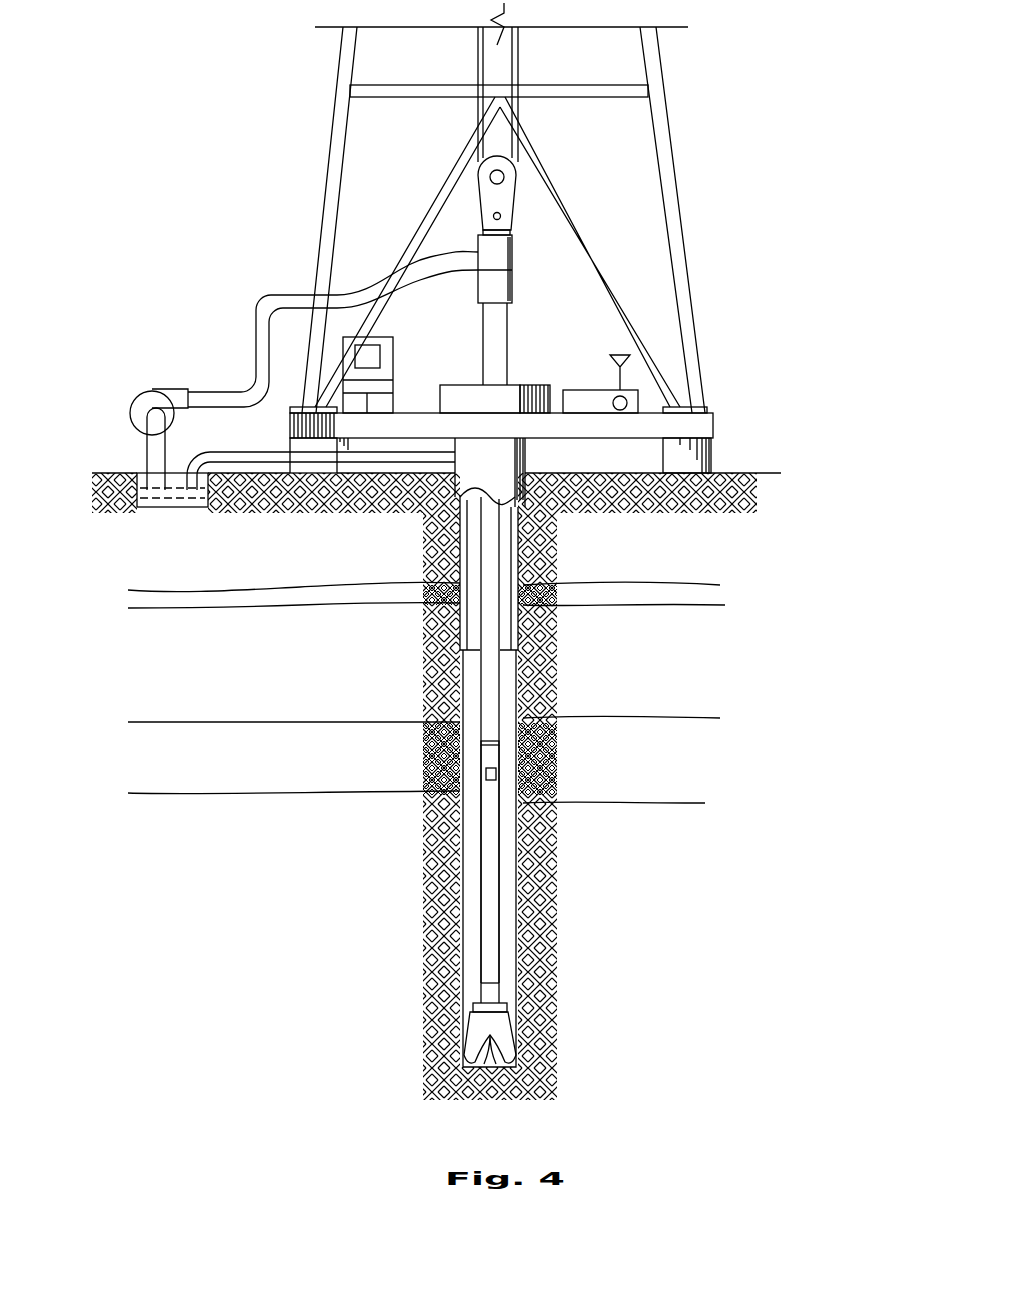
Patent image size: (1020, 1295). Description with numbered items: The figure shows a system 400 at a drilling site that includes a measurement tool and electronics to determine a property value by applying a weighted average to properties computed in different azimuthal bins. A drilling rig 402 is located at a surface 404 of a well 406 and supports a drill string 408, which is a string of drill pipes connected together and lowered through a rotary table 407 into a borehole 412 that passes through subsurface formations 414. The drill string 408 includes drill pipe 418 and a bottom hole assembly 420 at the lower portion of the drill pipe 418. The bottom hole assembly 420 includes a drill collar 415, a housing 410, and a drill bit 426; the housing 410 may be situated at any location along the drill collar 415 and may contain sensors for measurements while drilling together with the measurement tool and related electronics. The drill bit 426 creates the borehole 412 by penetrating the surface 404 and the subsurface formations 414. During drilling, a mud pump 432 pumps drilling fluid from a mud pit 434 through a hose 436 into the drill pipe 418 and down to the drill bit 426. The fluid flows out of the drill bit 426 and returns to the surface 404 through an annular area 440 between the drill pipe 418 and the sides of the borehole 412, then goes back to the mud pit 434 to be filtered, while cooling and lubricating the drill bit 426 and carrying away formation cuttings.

The system 400 is at (238, 140).
The drilling rig 402 is at (672, 168).
The surface 404 is at (766, 473).
The well 406 is at (534, 467).
The rotary table 407 is at (458, 385).
The drill string 408 is at (503, 583).
The housing 410 is at (497, 773).
The borehole 412 is at (519, 548).
The subsurface formations 414 is at (133, 555).
The drill collar 415 is at (495, 762).
The drill pipe 418 is at (485, 675).
The bottom hole assembly 420 is at (418, 645).
The drill bit 426 is at (498, 1022).
The mud pump 432 is at (162, 390).
The mud pit 434 is at (156, 508).
The hose 436 is at (267, 293).
The annular area 440 is at (512, 690).